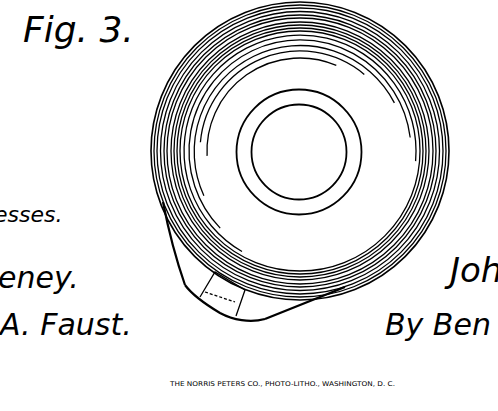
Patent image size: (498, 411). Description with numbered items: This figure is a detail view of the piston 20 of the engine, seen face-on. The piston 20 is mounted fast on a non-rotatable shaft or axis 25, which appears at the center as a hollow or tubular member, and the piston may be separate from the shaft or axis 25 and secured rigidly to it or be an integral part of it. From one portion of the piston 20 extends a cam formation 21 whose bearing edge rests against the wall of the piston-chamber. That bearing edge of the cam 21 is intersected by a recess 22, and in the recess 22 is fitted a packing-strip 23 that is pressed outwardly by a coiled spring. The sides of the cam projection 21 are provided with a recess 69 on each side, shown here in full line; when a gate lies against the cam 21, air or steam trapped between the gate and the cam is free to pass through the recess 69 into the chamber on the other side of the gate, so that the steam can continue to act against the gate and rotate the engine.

The piston 20 is at (395, 108).
The cam formation 21 is at (278, 298).
The recess 22 is at (214, 273).
The packing-strip 23 is at (223, 307).
The shaft or axis 25 is at (350, 177).
The recess 69 is at (172, 245).